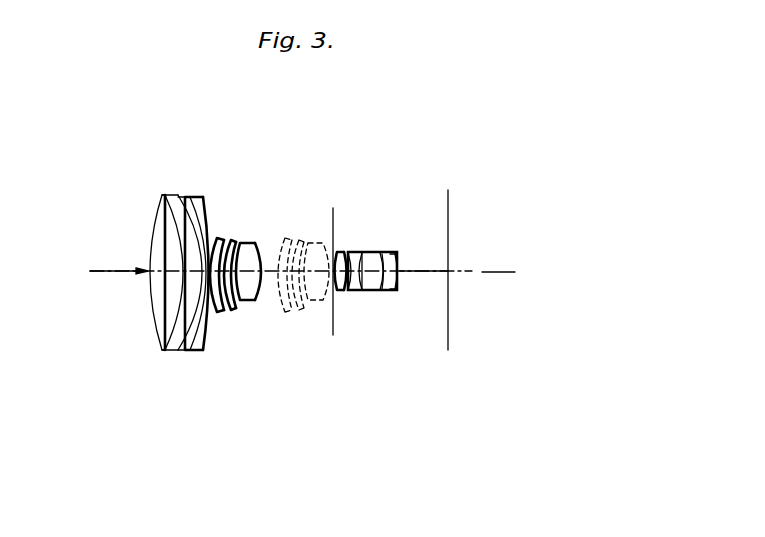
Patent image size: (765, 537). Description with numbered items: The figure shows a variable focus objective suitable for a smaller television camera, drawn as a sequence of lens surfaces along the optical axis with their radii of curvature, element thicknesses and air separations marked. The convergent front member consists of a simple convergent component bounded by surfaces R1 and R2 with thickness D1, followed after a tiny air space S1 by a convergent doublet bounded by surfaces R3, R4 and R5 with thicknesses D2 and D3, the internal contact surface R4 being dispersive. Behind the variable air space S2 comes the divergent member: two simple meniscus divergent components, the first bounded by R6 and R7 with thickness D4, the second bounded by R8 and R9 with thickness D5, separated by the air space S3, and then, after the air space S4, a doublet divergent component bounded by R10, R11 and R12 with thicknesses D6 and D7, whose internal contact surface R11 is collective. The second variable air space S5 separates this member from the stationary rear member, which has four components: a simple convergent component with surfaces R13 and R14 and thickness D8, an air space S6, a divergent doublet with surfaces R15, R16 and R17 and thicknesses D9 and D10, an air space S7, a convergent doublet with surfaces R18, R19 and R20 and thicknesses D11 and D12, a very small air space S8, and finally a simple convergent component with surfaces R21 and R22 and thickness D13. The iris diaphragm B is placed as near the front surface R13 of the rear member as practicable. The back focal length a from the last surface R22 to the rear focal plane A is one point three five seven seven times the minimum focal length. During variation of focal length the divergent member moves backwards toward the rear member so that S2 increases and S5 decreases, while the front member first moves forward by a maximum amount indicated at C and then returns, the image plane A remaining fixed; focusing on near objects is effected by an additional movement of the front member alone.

The radius of curvature of first surface R1 is at (151, 263).
The radius of curvature of second surface R2 is at (163, 242).
The radius of curvature of third surface R3 is at (177, 214).
The radius of curvature of fourth surface R4 is at (181, 217).
The radius of curvature of fifth surface R5 is at (190, 236).
The radius of curvature of sixth surface R6 is at (206, 245).
The radius of curvature of seventh surface R7 is at (212, 240).
The radius of curvature of eighth surface R8 is at (220, 246).
The radius of curvature of ninth surface R9 is at (227, 248).
The radius of curvature of tenth surface R10 is at (236, 250).
The radius of curvature of eleventh surface R11 is at (242, 253).
The radius of curvature of twelfth surface R12 is at (259, 256).
The radius of curvature of thirteenth surface R13 is at (338, 252).
The radius of curvature of fourteenth surface R14 is at (346, 252).
The radius of curvature of fifteenth surface R15 is at (352, 253).
The radius of curvature of sixteenth surface R16 is at (362, 253).
The radius of curvature of seventeenth surface R17 is at (370, 252).
The radius of curvature of eighteenth surface R18 is at (378, 252).
The radius of curvature of nineteenth surface R19 is at (385, 252).
The radius of curvature of twentieth surface R20 is at (392, 252).
The radius of curvature of twenty-first surface R21 is at (397, 252).
The radius of curvature of twenty-second surface R22 is at (400, 260).
The axial thickness of first element D1 is at (158, 300).
The axial thickness of second element D2 is at (176, 320).
The axial thickness of third element D3 is at (192, 335).
The axial thickness of fourth element D4 is at (214, 314).
The axial thickness of fifth element D5 is at (229, 312).
The axial thickness of sixth element D6 is at (250, 302).
The axial thickness of seventh element D7 is at (283, 312).
The axial thickness of eighth element D8 is at (340, 292).
The axial thickness of ninth element D9 is at (356, 292).
The axial thickness of tenth element D10 is at (368, 292).
The axial thickness of eleventh element D11 is at (380, 292).
The axial thickness of twelfth element D12 is at (390, 292).
The axial thickness of thirteenth element D13 is at (396, 289).
The axial air separation 1 S1 is at (165, 335).
The axial air separation 2 S2 is at (206, 345).
The axial air separation 3 S3 is at (223, 306).
The axial air separation 4 S4 is at (237, 300).
The axial air separation 5 S5 is at (322, 306).
The axial air separation 6 S6 is at (347, 292).
The axial air separation 7 S7 is at (386, 292).
The axial air separation 8 S8 is at (399, 286).
The rear focal plane A is at (458, 270).
The iris diaphragm B is at (333, 222).
The maximum forward movement of front member C is at (138, 279).
The back focal length a is at (400, 264).